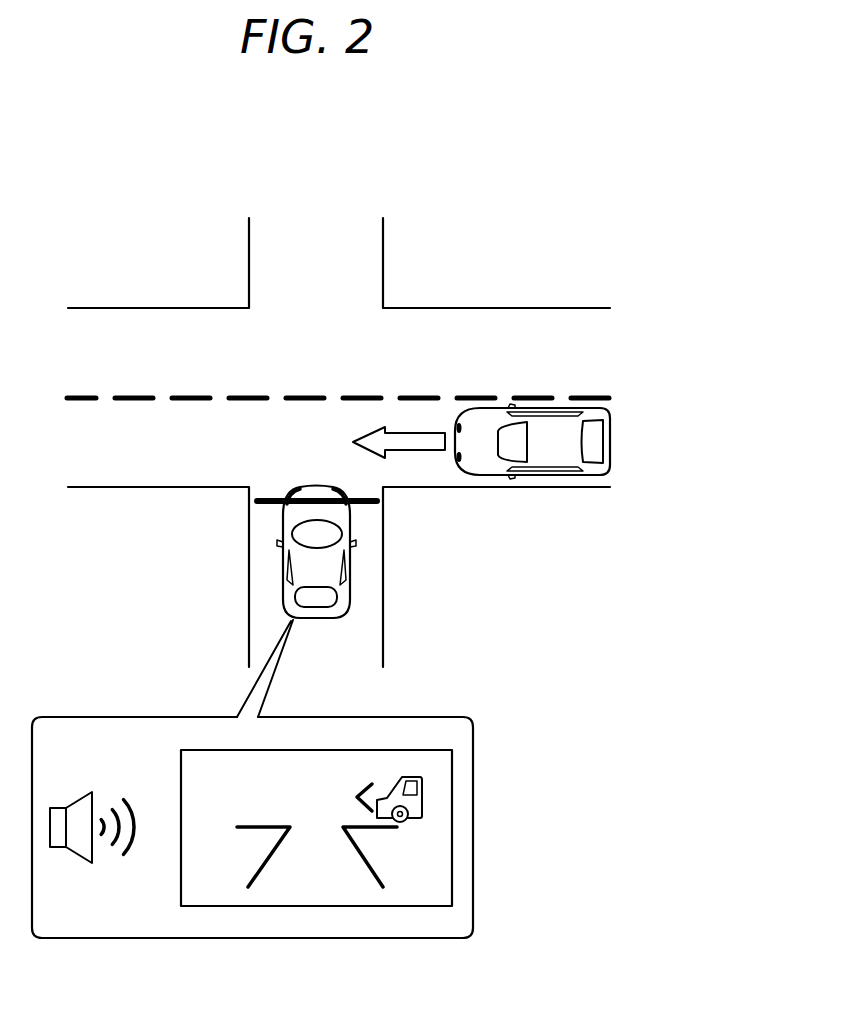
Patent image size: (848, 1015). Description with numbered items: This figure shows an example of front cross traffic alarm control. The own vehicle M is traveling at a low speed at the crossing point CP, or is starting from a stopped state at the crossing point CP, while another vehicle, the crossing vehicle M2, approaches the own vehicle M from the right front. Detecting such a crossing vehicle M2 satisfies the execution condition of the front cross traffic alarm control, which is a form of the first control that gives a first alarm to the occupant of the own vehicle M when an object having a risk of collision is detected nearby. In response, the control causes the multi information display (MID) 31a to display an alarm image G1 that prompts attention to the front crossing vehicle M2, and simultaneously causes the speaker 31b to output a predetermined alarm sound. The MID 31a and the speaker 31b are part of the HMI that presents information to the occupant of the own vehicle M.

The crossing point CP is at (238, 326).
The own vehicle M is at (340, 594).
The crossing vehicle M2 is at (590, 472).
The alarm image G1 is at (436, 851).
The multi information display (MID) 31a is at (181, 767).
The speaker 31b is at (78, 858).